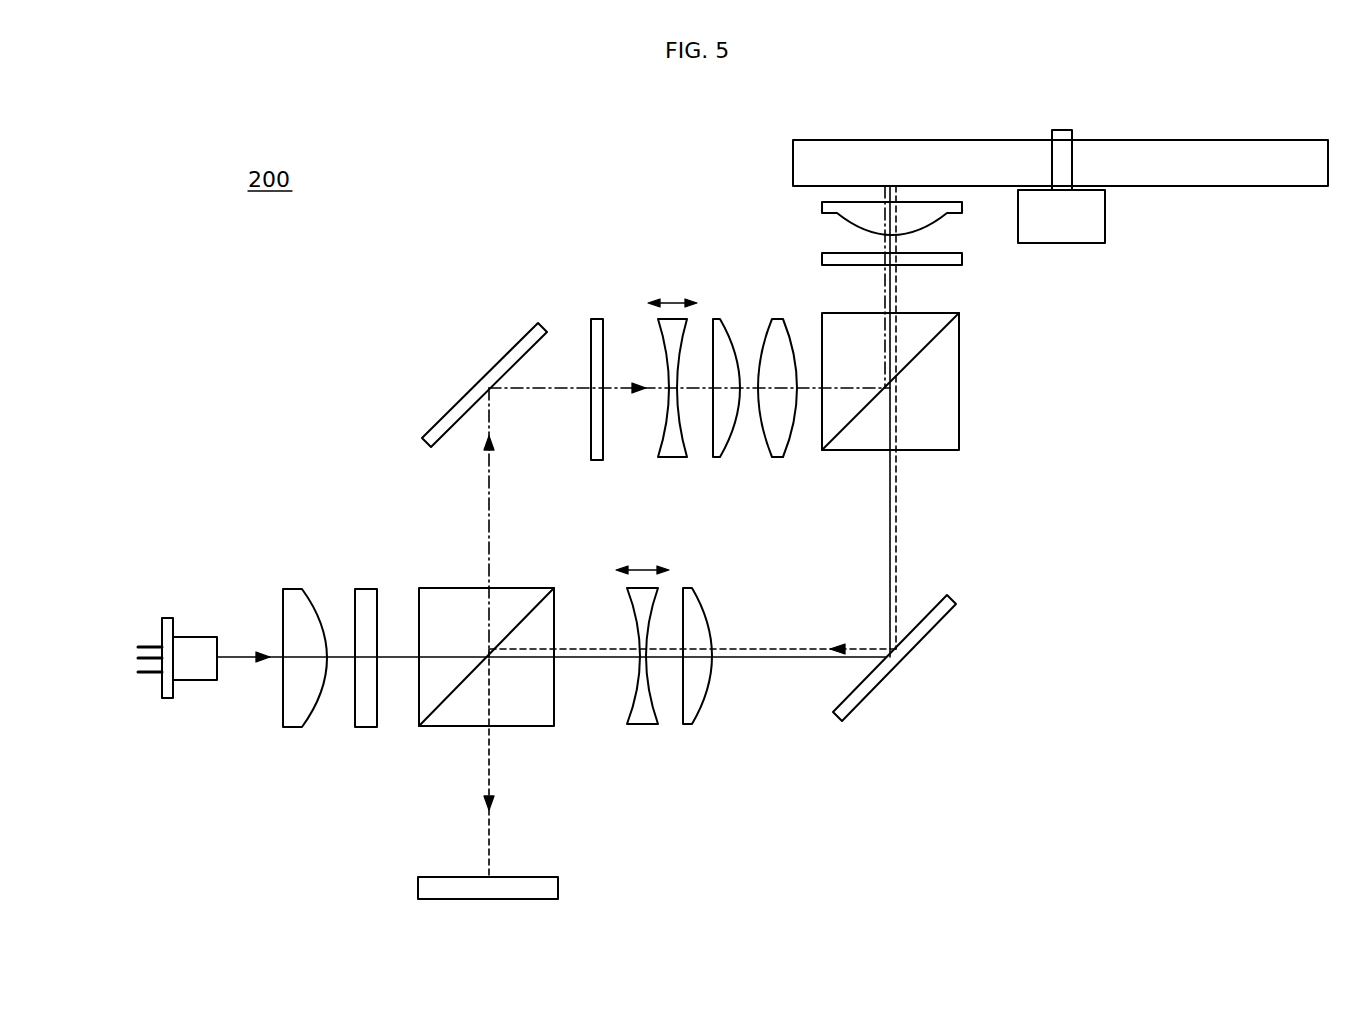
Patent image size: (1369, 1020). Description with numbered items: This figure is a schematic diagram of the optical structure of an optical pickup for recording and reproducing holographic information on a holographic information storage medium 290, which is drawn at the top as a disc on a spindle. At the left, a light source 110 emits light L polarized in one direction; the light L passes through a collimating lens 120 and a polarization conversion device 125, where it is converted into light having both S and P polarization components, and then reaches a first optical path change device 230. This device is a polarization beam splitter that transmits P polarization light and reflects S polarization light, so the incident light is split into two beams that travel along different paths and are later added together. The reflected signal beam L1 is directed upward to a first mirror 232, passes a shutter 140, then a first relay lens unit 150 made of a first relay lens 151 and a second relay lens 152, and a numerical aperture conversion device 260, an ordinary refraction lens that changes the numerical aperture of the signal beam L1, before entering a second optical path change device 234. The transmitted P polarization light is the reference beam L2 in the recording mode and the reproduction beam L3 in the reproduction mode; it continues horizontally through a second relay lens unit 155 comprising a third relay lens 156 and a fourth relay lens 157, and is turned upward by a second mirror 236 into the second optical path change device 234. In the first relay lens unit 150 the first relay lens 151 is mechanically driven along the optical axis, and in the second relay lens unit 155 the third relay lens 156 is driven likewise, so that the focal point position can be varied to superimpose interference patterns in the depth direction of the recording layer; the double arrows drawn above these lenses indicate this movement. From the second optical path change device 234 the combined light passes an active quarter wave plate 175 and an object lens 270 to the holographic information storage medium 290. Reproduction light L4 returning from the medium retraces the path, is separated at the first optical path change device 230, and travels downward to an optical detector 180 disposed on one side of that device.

The light source 110 is at (165, 698).
The collimating lens 120 is at (295, 727).
The polarization conversion device 125 is at (365, 727).
The first optical path change device 230 is at (442, 726).
The optical detector 180 is at (418, 890).
The first mirror 232 is at (510, 345).
The shutter 140 is at (593, 460).
The first relay lens 151 is at (670, 457).
The second relay lens 152 is at (718, 457).
The first relay lens unit 150 is at (732, 520).
The numerical aperture conversion device 260 is at (778, 457).
The second optical path change device 234 is at (959, 382).
The object lens 270 is at (822, 209).
The active quarter wave plate 175 is at (822, 261).
The holographic information storage medium 290 is at (1253, 137).
The second mirror 236 is at (927, 628).
The third relay lens 156 is at (642, 724).
The fourth relay lens 157 is at (687, 724).
The second relay lens unit 155 is at (705, 797).
The light L is at (246, 648).
The signal beam L1 is at (484, 508).
The reference beam L2 is at (744, 742).
The reproduction beam L3 is at (777, 660).
The reproduction light L4 is at (805, 648).